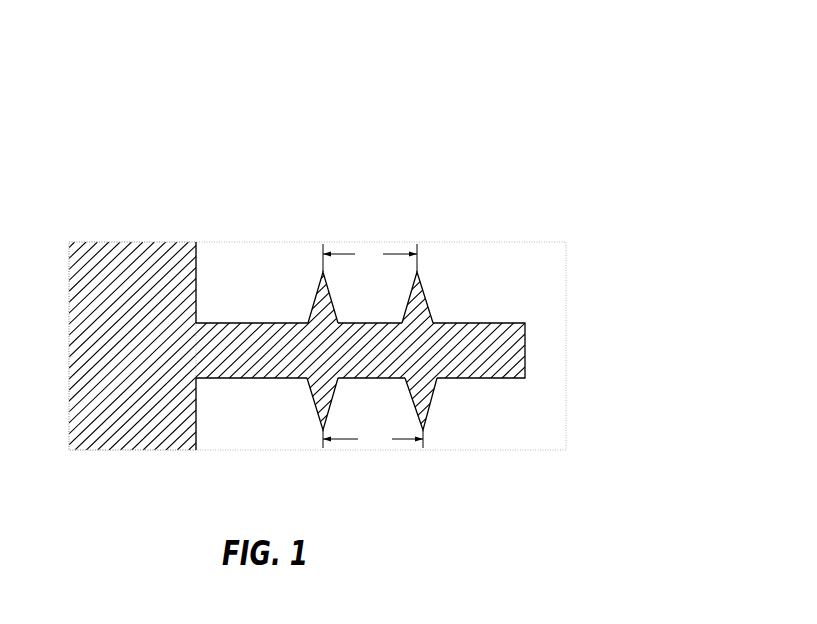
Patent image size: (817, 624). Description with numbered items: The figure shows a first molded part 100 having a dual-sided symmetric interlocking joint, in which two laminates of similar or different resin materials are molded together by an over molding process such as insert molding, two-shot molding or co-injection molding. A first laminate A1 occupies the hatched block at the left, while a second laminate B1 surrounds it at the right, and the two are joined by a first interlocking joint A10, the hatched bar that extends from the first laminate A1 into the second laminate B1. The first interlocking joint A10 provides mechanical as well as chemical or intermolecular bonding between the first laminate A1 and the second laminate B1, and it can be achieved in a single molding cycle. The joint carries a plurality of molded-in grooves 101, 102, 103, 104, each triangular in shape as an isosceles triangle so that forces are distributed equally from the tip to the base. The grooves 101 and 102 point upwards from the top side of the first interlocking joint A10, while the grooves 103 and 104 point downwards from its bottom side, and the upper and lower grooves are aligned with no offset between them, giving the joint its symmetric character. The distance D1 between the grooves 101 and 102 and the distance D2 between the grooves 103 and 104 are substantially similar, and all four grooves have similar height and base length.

The first molded part 100 is at (718, 100).
The first laminate A1 is at (111, 252).
The second laminate B1 is at (552, 242).
The first interlocking joint A10 is at (481, 313).
The groove 101 is at (313, 298).
The groove 102 is at (423, 291).
The groove 103 is at (318, 400).
The groove 104 is at (431, 399).
The distance between the grooves 101 and 102 D1 is at (370, 258).
The distance between the grooves 103 and 104 D2 is at (373, 437).